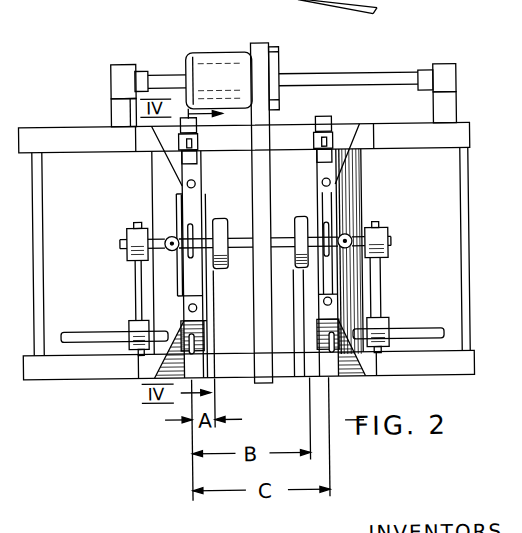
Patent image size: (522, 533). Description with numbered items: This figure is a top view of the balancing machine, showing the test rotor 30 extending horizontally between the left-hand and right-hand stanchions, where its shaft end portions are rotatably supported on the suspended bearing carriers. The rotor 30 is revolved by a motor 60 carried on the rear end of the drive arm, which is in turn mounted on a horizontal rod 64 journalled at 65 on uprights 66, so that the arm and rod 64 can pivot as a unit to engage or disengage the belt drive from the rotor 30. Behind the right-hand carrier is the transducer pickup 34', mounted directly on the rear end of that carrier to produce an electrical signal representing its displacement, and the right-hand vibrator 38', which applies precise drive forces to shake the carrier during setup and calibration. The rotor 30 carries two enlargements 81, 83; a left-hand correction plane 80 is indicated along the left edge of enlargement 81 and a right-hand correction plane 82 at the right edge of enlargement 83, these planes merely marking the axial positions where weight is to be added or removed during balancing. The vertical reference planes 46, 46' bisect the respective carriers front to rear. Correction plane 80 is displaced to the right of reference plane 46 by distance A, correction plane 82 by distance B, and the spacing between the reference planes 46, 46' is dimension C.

The motor 60 is at (219, 60).
The horizontal rod 64 is at (337, 75).
The journal 65 is at (423, 73).
The uprights 66 is at (113, 79).
The vibrator 38' is at (347, 108).
The transducer pickup 34' is at (378, 248).
The enlargement 81 is at (221, 219).
The test rotor 30 is at (283, 237).
The enlargement 83 is at (301, 270).
The left-hand correction plane 80 is at (214, 405).
The right-hand correction plane 82 is at (300, 407).
The vertical reference plane 46 is at (193, 456).
The vertical reference plane 46' is at (333, 452).